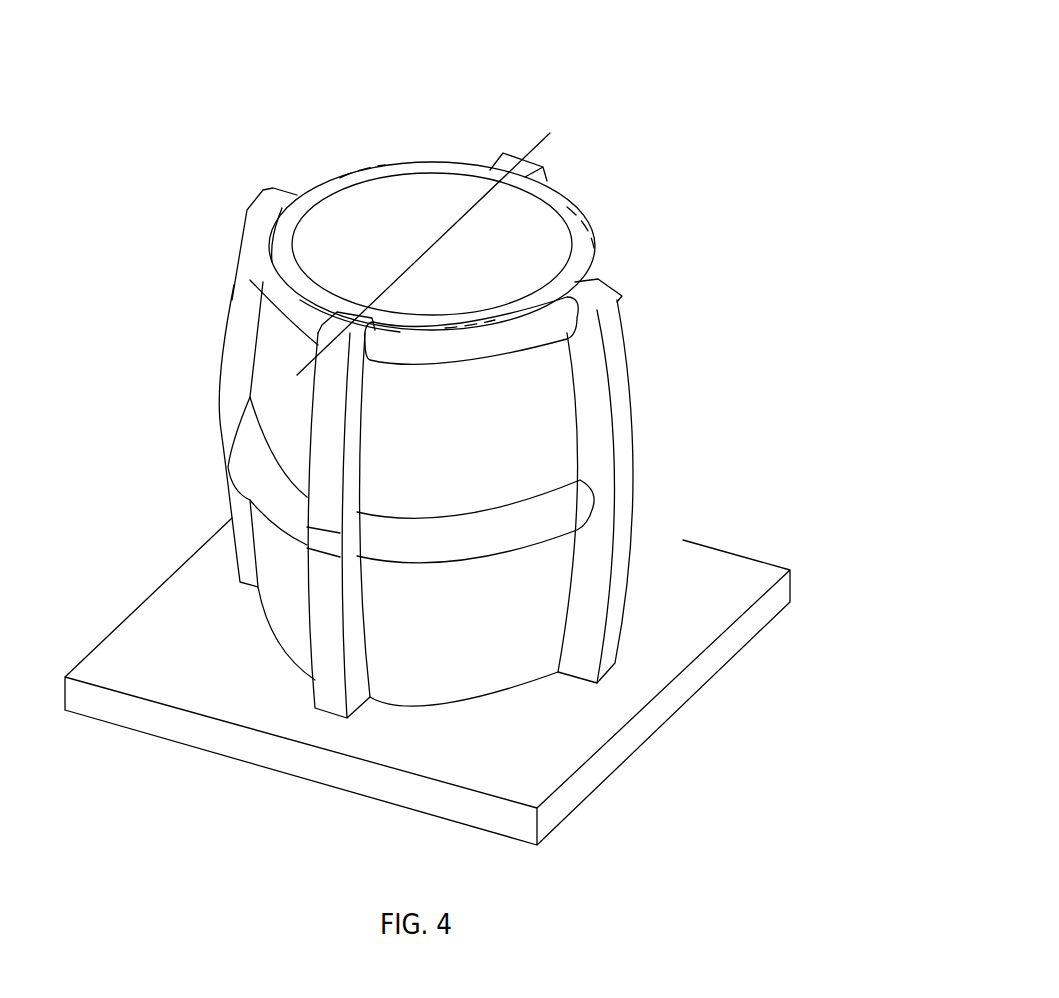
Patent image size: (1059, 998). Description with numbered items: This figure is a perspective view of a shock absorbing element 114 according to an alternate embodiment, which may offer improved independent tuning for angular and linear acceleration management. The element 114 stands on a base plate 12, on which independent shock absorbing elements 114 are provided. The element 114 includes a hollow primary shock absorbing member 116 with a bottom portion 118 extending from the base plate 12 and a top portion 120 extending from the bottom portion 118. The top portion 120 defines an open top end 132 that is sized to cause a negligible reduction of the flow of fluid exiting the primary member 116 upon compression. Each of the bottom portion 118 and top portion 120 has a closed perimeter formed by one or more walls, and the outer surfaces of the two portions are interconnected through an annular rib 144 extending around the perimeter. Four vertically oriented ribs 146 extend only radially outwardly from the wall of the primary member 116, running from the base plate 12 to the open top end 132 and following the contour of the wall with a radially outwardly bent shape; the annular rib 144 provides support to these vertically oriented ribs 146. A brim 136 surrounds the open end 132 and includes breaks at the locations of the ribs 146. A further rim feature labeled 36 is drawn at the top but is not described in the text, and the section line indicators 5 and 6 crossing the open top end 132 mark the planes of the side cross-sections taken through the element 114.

The base plate 12 is at (715, 583).
The shock absorbing element 114 is at (435, 402).
The ring 36 is at (600, 258).
The open top end 132 is at (422, 198).
The brim 136 is at (560, 207).
The vertically oriented ribs 146 is at (238, 358).
The annular rib 144 is at (253, 470).
The primary shock absorbing member 116 is at (287, 602).
The top portion 120 is at (540, 433).
The bottom portion 118 is at (548, 597).
The section line 5- 5 is at (700, 268).
The section line 6- 6 is at (640, 172).